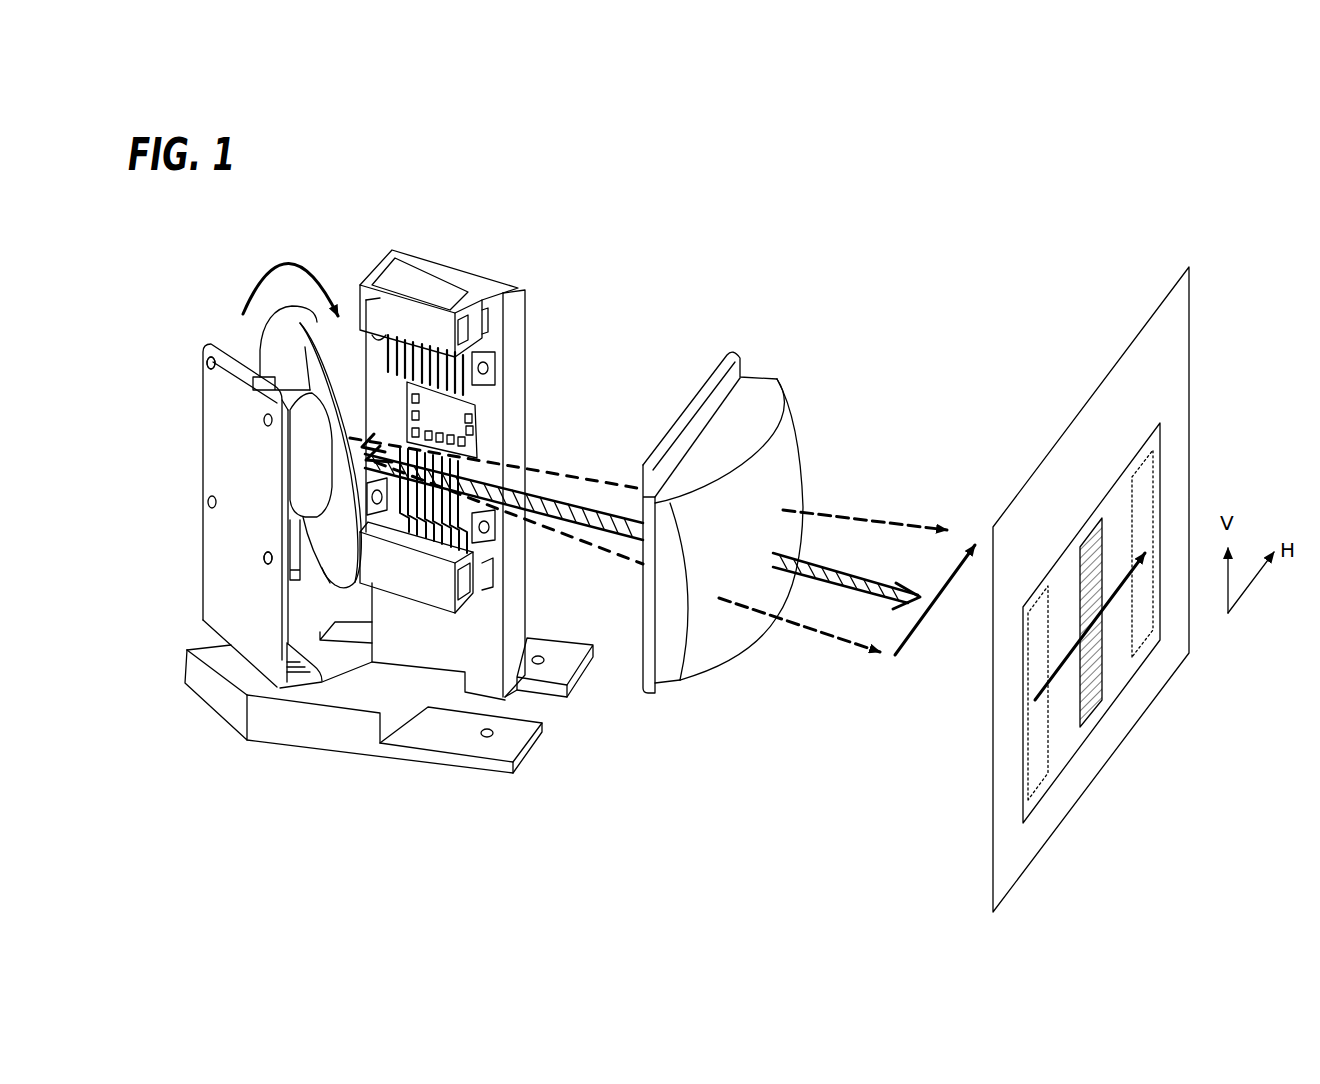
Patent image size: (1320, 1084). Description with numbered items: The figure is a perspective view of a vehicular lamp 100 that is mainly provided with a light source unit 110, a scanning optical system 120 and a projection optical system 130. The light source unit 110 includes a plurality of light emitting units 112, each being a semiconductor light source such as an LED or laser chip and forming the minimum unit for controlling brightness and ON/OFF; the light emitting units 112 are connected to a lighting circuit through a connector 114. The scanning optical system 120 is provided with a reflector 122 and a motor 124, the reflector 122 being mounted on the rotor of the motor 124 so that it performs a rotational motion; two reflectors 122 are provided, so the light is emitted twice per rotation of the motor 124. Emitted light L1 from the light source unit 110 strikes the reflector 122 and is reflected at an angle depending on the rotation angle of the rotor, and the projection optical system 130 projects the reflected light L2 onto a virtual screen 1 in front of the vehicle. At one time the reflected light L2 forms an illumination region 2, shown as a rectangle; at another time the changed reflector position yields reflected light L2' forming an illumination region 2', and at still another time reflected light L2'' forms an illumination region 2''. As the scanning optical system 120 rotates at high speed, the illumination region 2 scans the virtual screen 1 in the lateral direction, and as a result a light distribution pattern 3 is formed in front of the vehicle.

The vehicular lamp 100 is at (796, 123).
The light source unit 110 is at (519, 275).
The light emitting unit 112 is at (460, 415).
The connector 114 is at (368, 300).
The scanning optical system 120 is at (224, 324).
The reflector 122 is at (282, 355).
The motor 124 is at (302, 452).
The projection optical system 130 is at (775, 378).
The virtual screen 1 is at (1145, 326).
The light distribution pattern 3 is at (1112, 490).
The illumination region 2 is at (1115, 666).
The illumination region 2' is at (1171, 593).
The illumination region 2'' is at (1070, 733).
The emitted light L1 is at (364, 408).
The reflected light L2 is at (874, 595).
The reflected light L2' is at (648, 484).
The reflected light L2'' is at (627, 587).